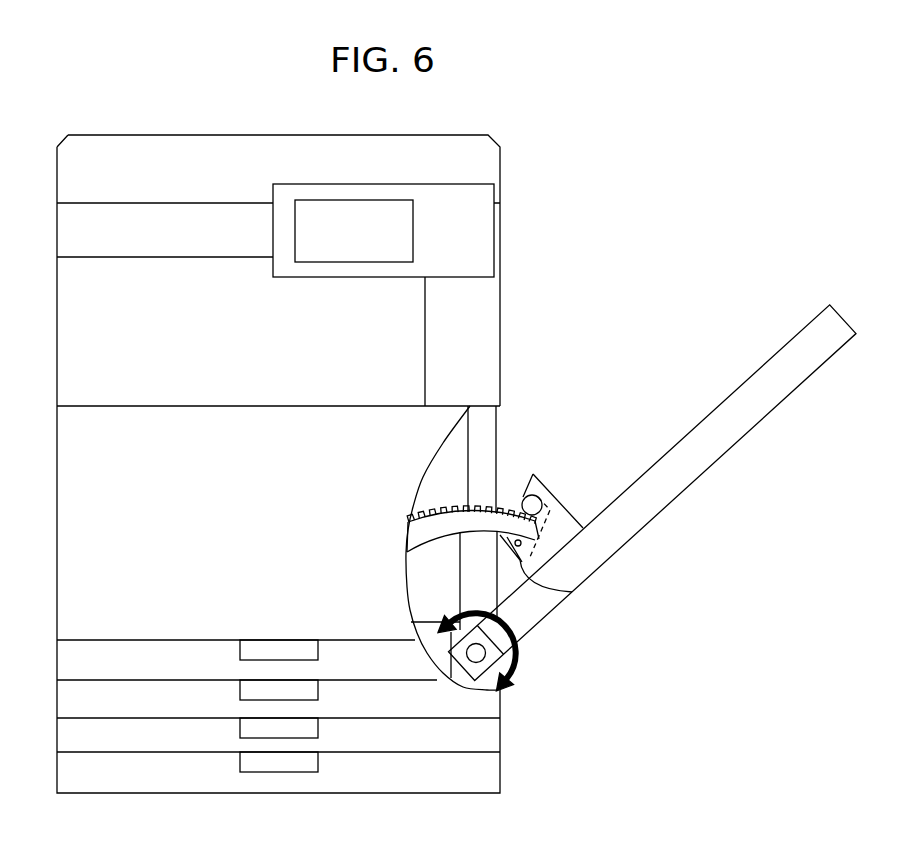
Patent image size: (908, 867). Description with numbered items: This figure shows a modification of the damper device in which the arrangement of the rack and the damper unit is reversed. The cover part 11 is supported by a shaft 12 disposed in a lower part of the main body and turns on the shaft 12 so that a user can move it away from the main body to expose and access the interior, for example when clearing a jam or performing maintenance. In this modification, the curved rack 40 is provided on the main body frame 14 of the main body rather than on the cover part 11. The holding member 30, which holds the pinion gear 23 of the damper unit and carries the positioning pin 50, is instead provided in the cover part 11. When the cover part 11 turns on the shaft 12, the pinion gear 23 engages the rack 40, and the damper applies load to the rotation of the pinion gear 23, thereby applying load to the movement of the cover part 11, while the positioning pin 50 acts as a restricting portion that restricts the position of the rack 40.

The cover part 11 is at (667, 490).
The shaft 12 is at (485, 655).
The main body frame 14 is at (452, 443).
The pinion gear 23 is at (537, 497).
The holding member 30 is at (550, 518).
The rack 40 is at (483, 513).
The positioning pin 50 is at (525, 578).